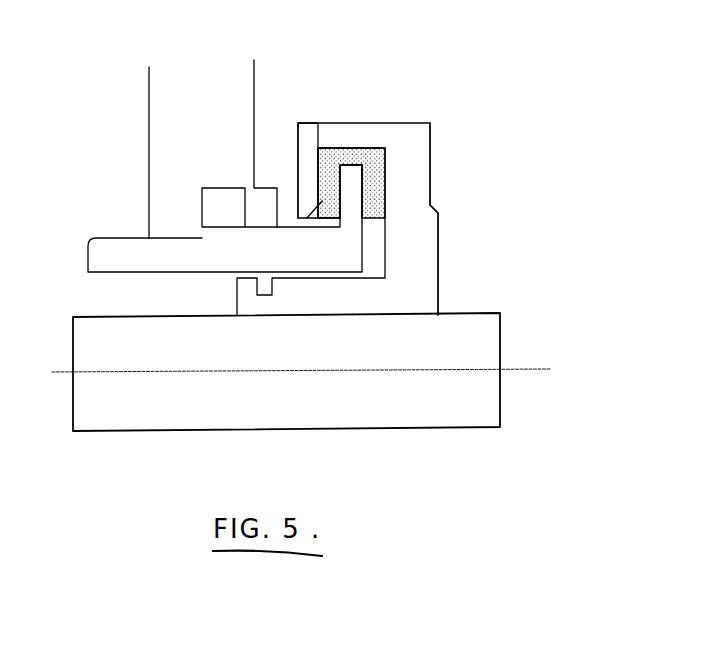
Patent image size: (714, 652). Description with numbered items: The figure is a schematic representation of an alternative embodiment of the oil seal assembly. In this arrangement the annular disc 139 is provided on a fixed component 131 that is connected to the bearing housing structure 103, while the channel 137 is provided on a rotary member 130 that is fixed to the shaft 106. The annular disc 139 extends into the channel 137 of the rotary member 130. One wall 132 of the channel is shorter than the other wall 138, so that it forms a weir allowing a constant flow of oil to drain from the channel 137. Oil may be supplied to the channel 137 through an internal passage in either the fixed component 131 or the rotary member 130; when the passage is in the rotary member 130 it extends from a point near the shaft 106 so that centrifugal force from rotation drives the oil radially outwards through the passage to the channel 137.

The bearing housing structure 103 is at (183, 80).
The shaft 106 is at (480, 397).
The rotary member 130 is at (413, 192).
The fixed component 131 is at (146, 232).
The wall of the channel 132 is at (305, 167).
The channel 137 is at (370, 150).
The other wall of the channel 138 is at (387, 168).
The annular disc 139 is at (348, 160).